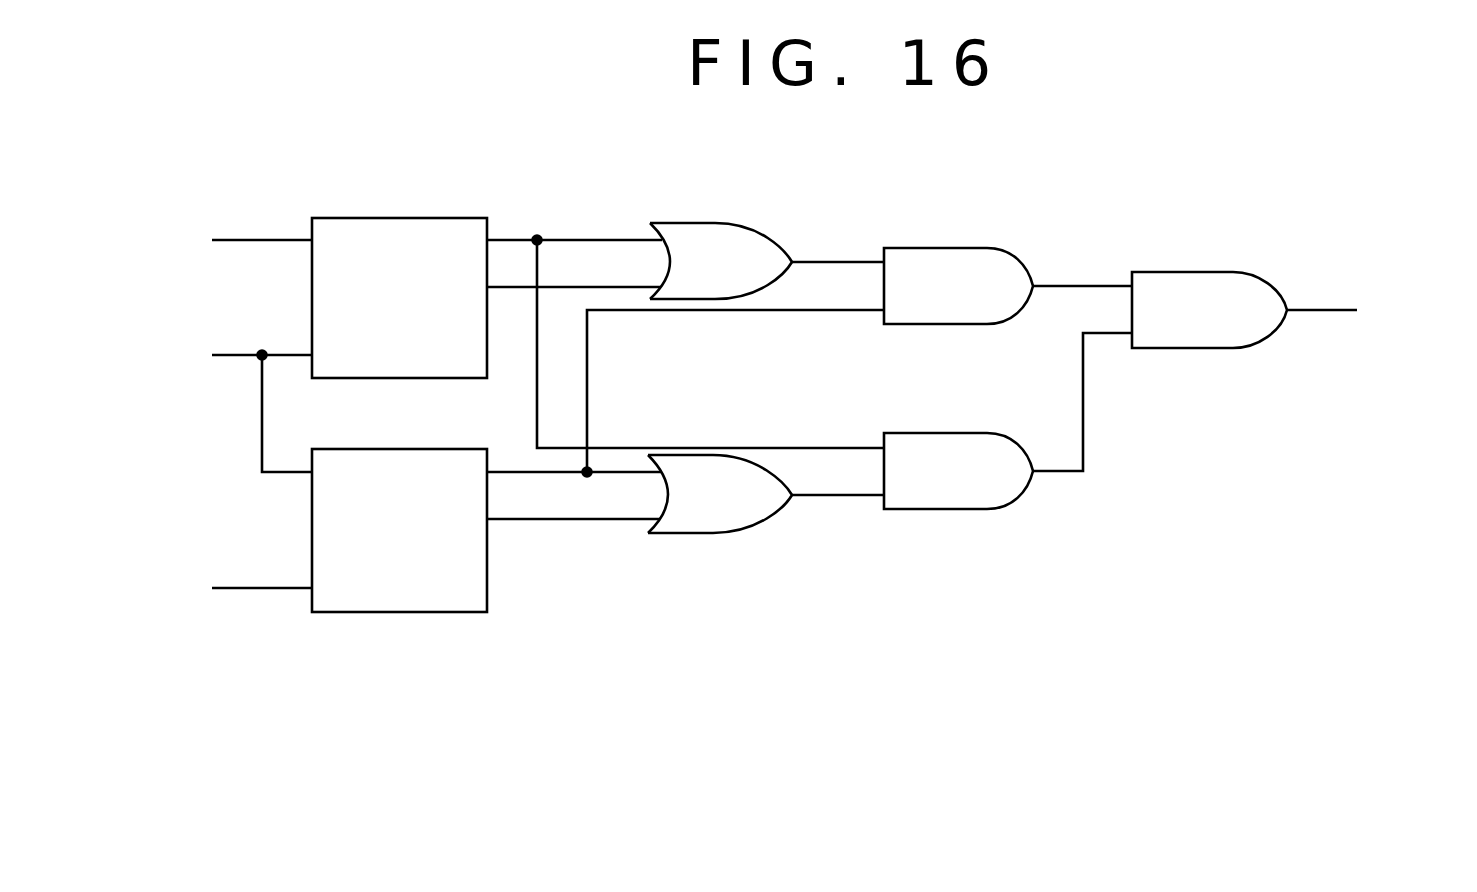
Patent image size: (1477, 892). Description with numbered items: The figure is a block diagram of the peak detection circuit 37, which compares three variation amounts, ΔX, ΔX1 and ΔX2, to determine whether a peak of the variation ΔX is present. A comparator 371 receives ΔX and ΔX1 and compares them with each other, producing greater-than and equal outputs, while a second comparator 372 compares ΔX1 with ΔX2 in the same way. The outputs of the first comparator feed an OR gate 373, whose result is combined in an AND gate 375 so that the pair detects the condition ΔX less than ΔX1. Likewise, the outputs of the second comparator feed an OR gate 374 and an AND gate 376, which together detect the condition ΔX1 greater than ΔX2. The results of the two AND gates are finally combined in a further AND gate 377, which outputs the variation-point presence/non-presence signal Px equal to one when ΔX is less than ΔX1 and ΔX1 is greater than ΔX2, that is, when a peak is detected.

The peak detection circuit 37 is at (1100, 549).
The comparator 371 is at (399, 267).
The comparator 372 is at (399, 501).
The OR gate 373 is at (721, 228).
The OR gate 374 is at (720, 529).
The AND gate 375 is at (958, 252).
The AND gate 376 is at (958, 506).
The AND gate 377 is at (1209, 346).